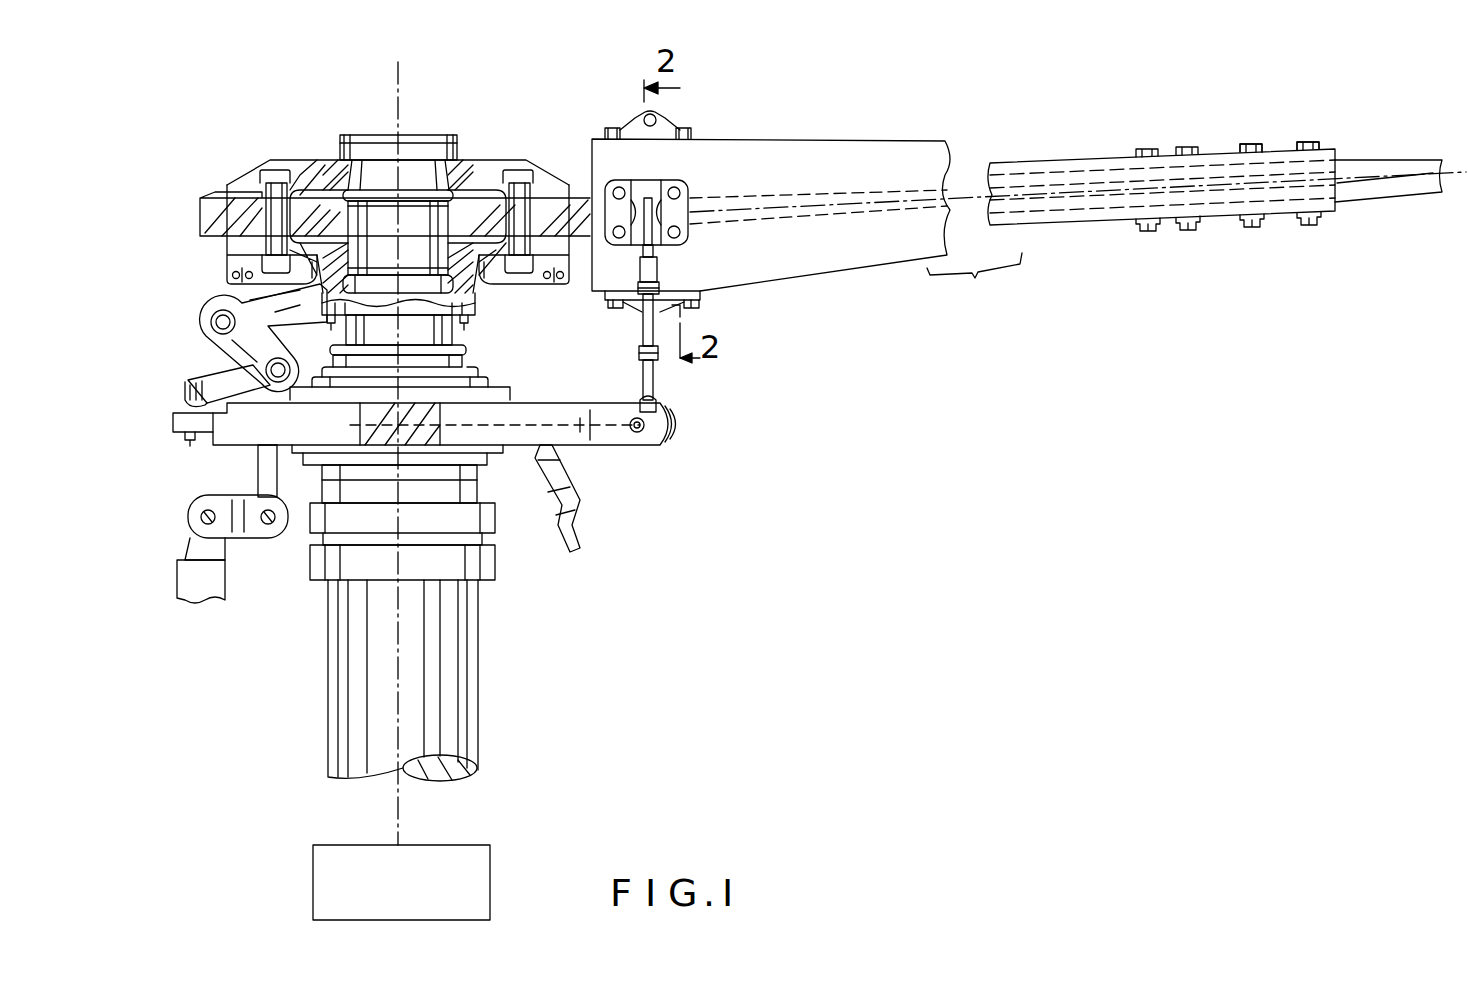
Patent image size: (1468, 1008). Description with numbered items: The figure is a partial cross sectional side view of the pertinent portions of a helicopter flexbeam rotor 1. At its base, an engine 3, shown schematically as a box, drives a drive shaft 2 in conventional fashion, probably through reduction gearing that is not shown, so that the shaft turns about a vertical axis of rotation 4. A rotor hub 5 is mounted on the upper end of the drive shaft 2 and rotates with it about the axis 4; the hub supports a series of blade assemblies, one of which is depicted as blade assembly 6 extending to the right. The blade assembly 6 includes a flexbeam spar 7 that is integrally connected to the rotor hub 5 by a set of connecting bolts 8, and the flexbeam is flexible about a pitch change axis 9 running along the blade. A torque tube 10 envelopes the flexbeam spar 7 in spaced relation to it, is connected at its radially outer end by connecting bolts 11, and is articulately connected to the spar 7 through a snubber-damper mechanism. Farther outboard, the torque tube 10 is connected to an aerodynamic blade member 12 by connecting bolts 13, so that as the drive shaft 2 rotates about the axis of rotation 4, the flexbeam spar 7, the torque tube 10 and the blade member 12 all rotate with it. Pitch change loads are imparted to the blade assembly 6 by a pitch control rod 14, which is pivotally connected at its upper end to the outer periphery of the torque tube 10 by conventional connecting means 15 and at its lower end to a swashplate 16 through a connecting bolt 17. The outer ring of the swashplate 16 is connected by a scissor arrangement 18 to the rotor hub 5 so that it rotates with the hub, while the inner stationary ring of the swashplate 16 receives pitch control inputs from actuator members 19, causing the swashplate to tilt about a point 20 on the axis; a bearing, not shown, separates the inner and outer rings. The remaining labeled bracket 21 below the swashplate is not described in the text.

The helicopter flexbeam rotor 1 is at (560, 36).
The drive shaft 2 is at (416, 664).
The engine 3 is at (453, 845).
The axis of rotation 4 is at (398, 95).
The rotor hub 5 is at (475, 160).
The blade assembly 6 is at (880, 141).
The flexbeam spar 7 is at (803, 190).
The connecting bolts 8 is at (526, 170).
The pitch change axis 9 is at (908, 205).
The torque tube 10 is at (748, 250).
The connecting bolts 11 is at (1187, 147).
The aerodynamic blade member 12 is at (1380, 162).
The connecting bolts 13 is at (1307, 142).
The pitch control rod 14 is at (646, 327).
The connecting means 15 is at (683, 192).
The swashplate 16 is at (603, 445).
The connecting bolt 17 is at (637, 434).
The scissor arrangement 18 is at (212, 335).
The actuator members 19 is at (580, 538).
The point 20 is at (410, 418).
The bracket 21 is at (260, 465).